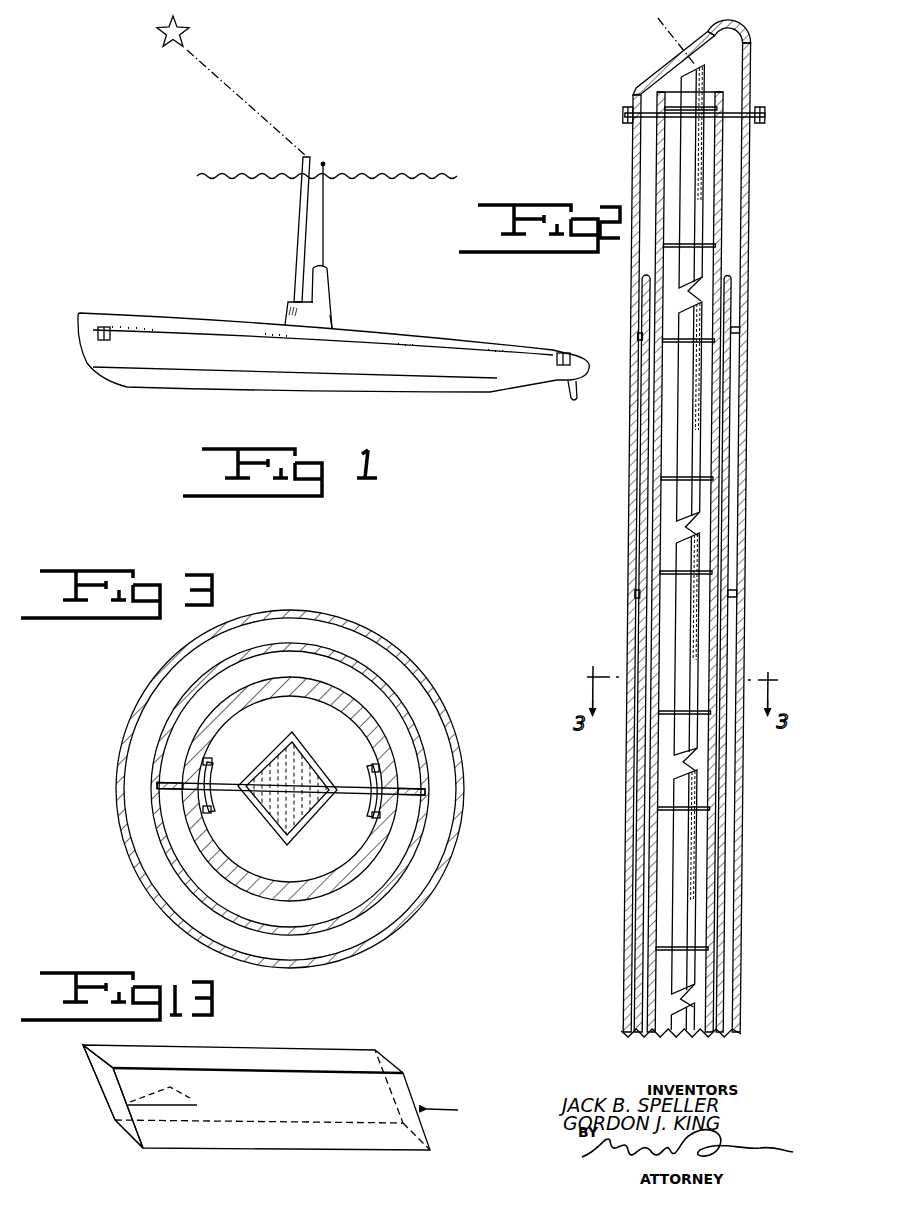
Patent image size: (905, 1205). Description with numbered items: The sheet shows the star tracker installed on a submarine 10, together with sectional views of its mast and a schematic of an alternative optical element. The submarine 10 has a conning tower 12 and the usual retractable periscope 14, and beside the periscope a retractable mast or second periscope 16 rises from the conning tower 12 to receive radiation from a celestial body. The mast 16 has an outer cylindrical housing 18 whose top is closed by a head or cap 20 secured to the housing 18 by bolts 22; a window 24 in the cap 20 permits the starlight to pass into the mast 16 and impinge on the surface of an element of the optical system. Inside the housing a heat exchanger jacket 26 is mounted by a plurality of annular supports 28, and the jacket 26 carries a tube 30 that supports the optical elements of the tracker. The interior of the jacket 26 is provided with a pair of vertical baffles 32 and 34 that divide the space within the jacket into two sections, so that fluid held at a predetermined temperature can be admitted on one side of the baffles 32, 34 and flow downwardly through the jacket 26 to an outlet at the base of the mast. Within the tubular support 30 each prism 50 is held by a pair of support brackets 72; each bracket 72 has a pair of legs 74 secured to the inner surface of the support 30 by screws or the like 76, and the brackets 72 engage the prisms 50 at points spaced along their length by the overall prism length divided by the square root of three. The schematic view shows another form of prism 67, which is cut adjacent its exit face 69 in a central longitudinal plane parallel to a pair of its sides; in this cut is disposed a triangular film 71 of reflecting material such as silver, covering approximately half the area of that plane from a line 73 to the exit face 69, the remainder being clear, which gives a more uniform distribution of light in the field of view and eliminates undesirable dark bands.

In FIG. 1, the submarine 10 is at (409, 329).
In FIG. 1, the conning tower 12 is at (320, 320).
In FIG. 1, the retractable periscope 14 is at (323, 248).
In FIG. 1, the retractable mast 16 is at (298, 237).
In FIG. 2, the retractable mast 16 is at (608, 575).
In FIG. 2, the outer cylindrical housing 18 is at (750, 473).
In FIG. 3, the outer cylindrical housing 18 is at (463, 845).
In FIG. 2, the head or cap 20 is at (750, 80).
In FIG. 2, the bolts 22 is at (630, 108).
In FIG. 2, the window 24 is at (680, 47).
In FIG. 2, the heat exchanger jacket 26 is at (679, 650).
In FIG. 3, the heat exchanger jacket 26 is at (428, 774).
In FIG. 2, the annular supports 28 is at (738, 330).
In FIG. 2, the tube 30 is at (724, 197).
In FIG. 3, the tube 30 is at (362, 883).
In FIG. 2, the vertical baffle 32 is at (652, 297).
In FIG. 3, the vertical baffle 32 is at (185, 779).
In FIG. 2, the vertical baffle 34 is at (739, 293).
In FIG. 3, the vertical baffle 34 is at (413, 780).
In FIG. 2, the prism 50 is at (704, 173).
In FIG. 3, the prism 50 is at (278, 832).
In FIG. 13, the prism 67 is at (290, 1043).
In FIG. 13, the exit face 69 is at (102, 1080).
In FIG. 13, the triangular film 71 is at (165, 1105).
In FIG. 13, the line 73 is at (192, 1099).
In FIG. 2, the support bracket 72 is at (705, 106).
In FIG. 3, the support bracket 72 is at (297, 840).
In FIG. 3, the legs 74 is at (223, 783).
In FIG. 3, the screws 76 is at (210, 810).